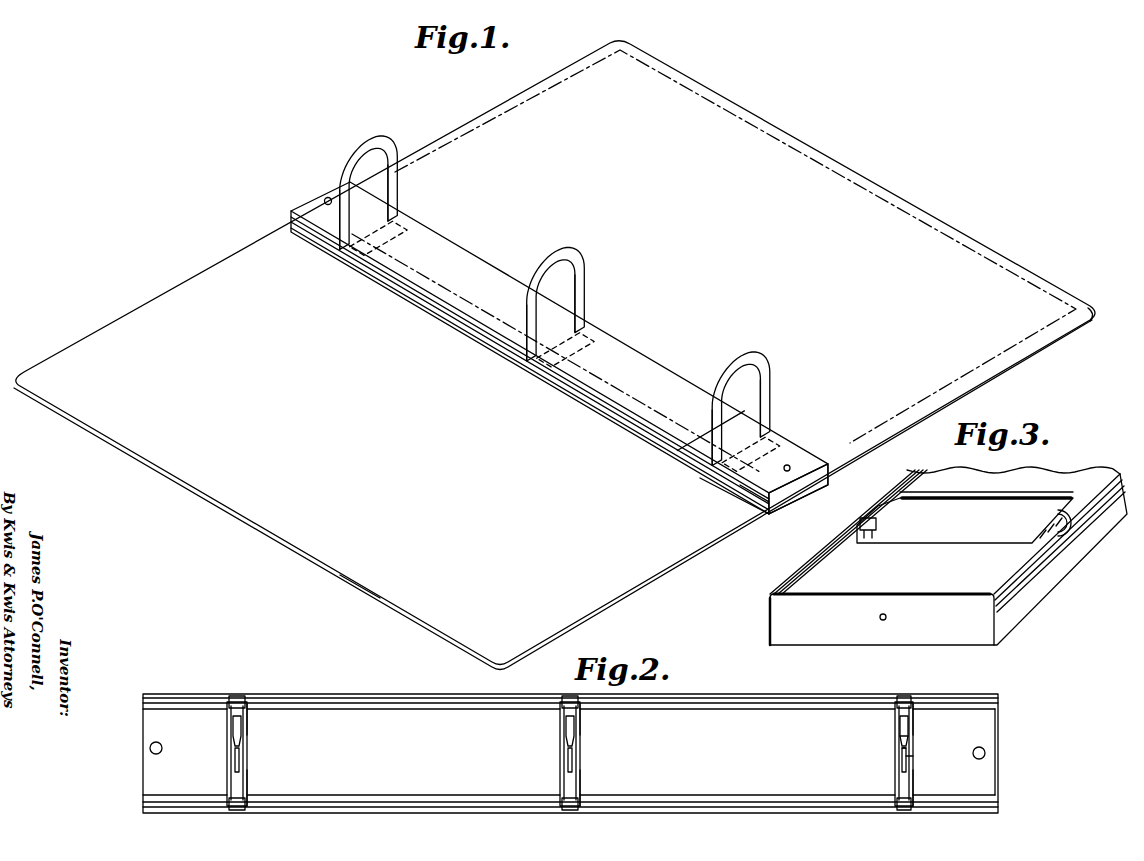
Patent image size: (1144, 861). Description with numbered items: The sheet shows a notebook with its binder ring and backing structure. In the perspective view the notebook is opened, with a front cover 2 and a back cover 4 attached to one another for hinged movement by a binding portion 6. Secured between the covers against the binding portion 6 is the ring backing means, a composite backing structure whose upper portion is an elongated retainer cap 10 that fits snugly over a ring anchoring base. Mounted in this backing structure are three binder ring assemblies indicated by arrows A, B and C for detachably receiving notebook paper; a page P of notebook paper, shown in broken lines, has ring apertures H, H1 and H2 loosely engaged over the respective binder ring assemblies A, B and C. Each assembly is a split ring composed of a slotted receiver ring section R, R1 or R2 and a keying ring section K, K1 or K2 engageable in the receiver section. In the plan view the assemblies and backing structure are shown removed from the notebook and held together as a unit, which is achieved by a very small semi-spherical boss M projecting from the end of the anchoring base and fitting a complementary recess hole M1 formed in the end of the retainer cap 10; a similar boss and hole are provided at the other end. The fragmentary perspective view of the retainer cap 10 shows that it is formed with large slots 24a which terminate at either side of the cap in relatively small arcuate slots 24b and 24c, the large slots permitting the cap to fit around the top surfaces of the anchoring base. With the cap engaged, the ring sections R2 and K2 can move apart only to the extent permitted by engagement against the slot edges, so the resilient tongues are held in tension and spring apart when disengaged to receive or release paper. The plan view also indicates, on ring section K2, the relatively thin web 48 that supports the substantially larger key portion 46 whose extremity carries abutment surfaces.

In FIG. 1, the page of notebook paper P is at (885, 198).
In FIG. 1, the front cover 2 is at (366, 578).
In FIG. 1, the back cover 4 is at (1090, 314).
In FIG. 1, the elongated retainer cap 10 is at (650, 378).
In FIG. 3, the elongated retainer cap 10 is at (970, 580).
In FIG. 2, the elongated retainer cap 10 is at (768, 728).
In FIG. 1, the semi-spherical boss M is at (820, 478).
In FIG. 1, the binding portion 6 is at (793, 490).
In FIG. 1, the binder ring assembly A is at (385, 138).
In FIG. 2, the binder ring assembly A is at (240, 693).
In FIG. 1, the binder ring assembly B is at (575, 250).
In FIG. 2, the binder ring assembly B is at (568, 690).
In FIG. 1, the binder ring assembly C is at (762, 366).
In FIG. 2, the binder ring assembly C is at (912, 692).
In FIG. 1, the keying ring section K is at (398, 178).
In FIG. 2, the keying ring section K is at (248, 712).
In FIG. 1, the keying ring section K1 is at (585, 298).
In FIG. 2, the keying ring section K1 is at (581, 712).
In FIG. 1, the keying ring section K2 is at (770, 388).
In FIG. 2, the keying ring section K2 is at (914, 712).
In FIG. 1, the slotted ring section R is at (338, 190).
In FIG. 2, the slotted ring section R is at (245, 773).
In FIG. 1, the slotted ring section R1 is at (527, 345).
In FIG. 2, the slotted ring section R1 is at (578, 775).
In FIG. 1, the slotted ring section R2 is at (712, 462).
In FIG. 2, the slotted ring section R2 is at (910, 778).
In FIG. 1, the ring aperture H is at (410, 228).
In FIG. 1, the ring aperture H1 is at (598, 340).
In FIG. 1, the ring aperture H2 is at (782, 444).
In FIG. 1, the large slot 24a is at (740, 462).
In FIG. 3, the large slot 24a is at (1030, 515).
In FIG. 2, the large slot 24a is at (913, 756).
In FIG. 3, the small arcuate slot 24b is at (860, 522).
In FIG. 3, the small arcuate slot 24c is at (1072, 530).
In FIG. 3, the recess hole M1 is at (883, 620).
In FIG. 2, the key portion 46 is at (902, 752).
In FIG. 2, the web 48 is at (897, 742).